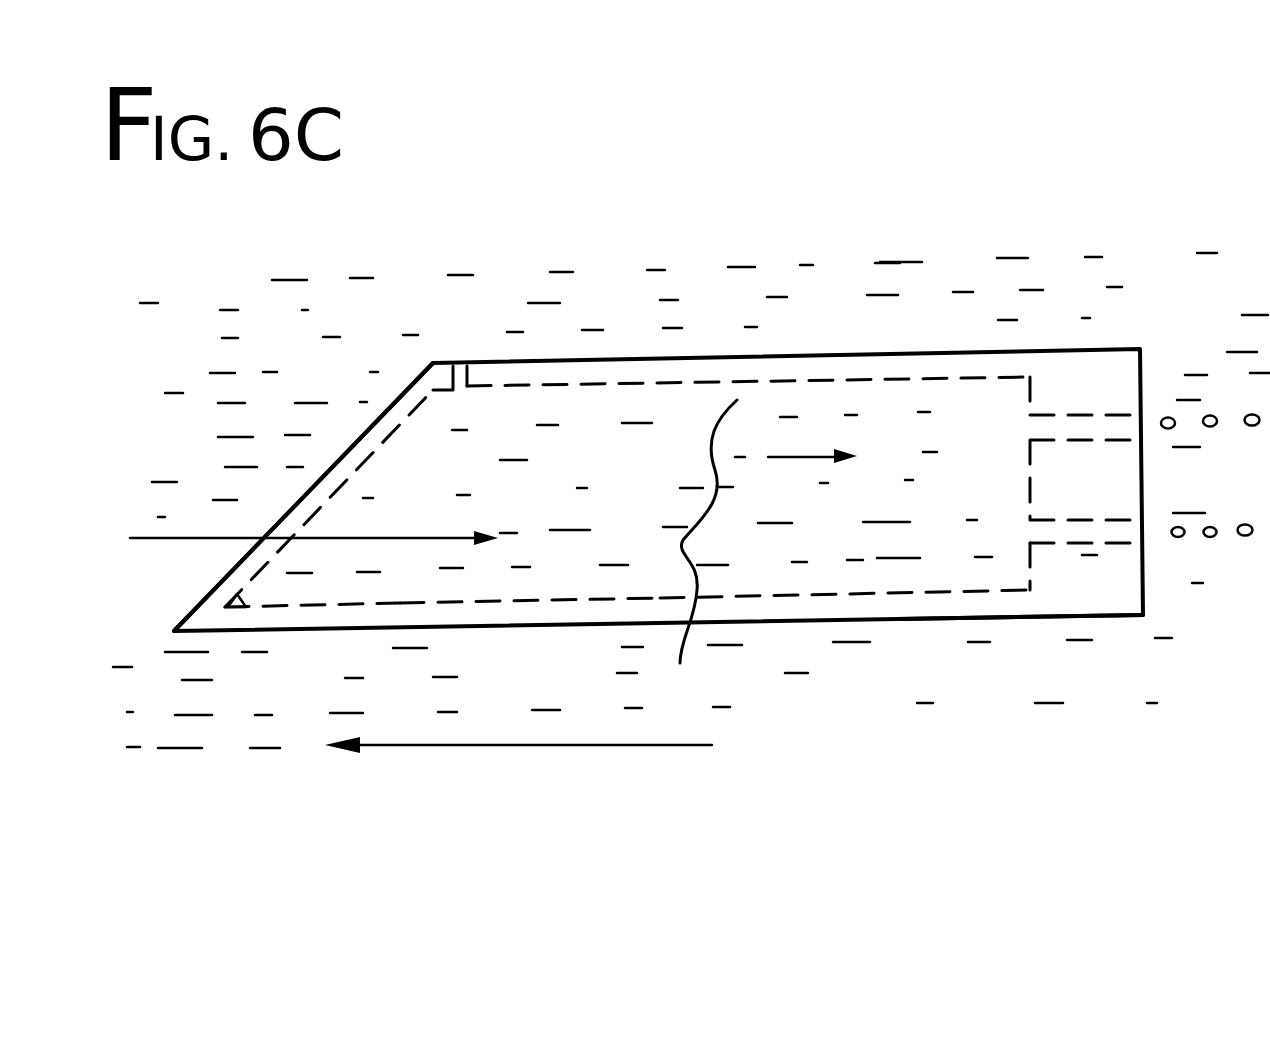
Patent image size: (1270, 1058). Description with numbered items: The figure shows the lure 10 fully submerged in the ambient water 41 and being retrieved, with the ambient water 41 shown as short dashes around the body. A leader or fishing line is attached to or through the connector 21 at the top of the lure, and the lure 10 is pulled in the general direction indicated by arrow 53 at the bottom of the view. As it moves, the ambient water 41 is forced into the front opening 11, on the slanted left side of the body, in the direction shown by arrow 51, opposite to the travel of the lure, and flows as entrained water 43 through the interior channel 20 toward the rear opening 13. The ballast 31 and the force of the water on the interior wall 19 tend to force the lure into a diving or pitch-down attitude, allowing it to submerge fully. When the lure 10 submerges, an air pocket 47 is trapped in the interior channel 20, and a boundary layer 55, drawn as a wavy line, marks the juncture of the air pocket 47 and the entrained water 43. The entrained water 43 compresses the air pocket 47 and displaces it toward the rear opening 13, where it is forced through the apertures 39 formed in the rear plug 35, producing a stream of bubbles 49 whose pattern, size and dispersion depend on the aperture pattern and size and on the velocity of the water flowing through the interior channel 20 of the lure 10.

The lure 10 is at (798, 337).
The front opening 11 is at (309, 491).
The rear opening 13 is at (990, 528).
The interior wall 19 is at (237, 596).
The interior channel 20 is at (615, 408).
The connector 21 is at (462, 366).
The ballast 31 is at (300, 590).
The rear plug 35 is at (1117, 403).
The apertures 39 is at (1130, 527).
The ambient water 41 is at (350, 372).
The entrained water 43 is at (562, 545).
The air pocket 47 is at (850, 532).
The stream of bubbles 49 is at (1212, 536).
The arrow 51 is at (422, 537).
The arrow 53 is at (513, 746).
The boundary layer 55 is at (694, 556).